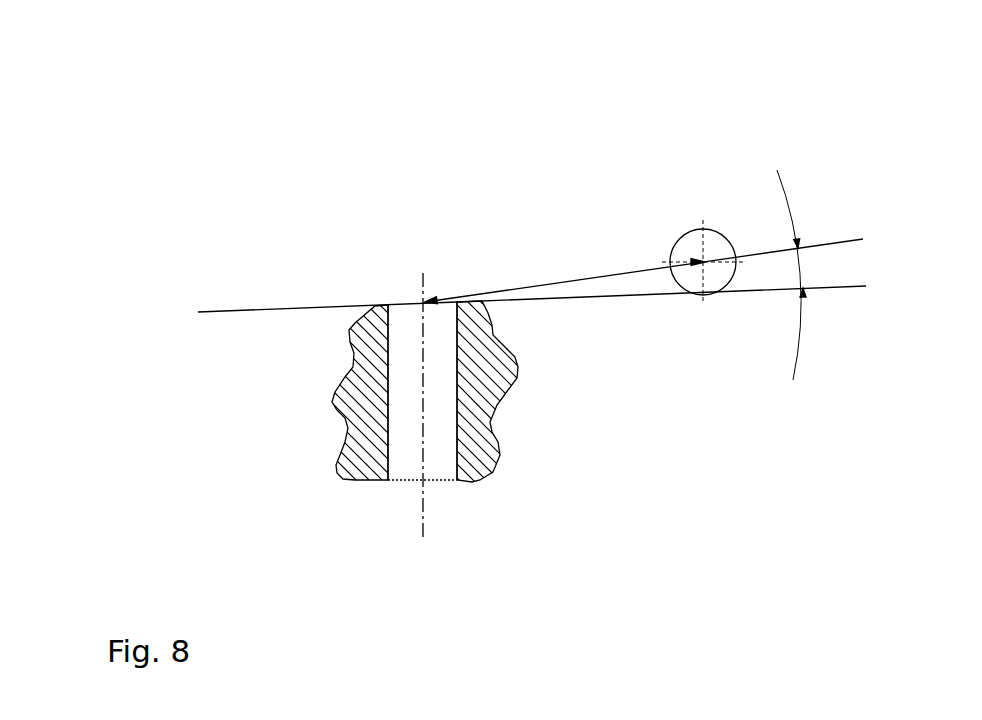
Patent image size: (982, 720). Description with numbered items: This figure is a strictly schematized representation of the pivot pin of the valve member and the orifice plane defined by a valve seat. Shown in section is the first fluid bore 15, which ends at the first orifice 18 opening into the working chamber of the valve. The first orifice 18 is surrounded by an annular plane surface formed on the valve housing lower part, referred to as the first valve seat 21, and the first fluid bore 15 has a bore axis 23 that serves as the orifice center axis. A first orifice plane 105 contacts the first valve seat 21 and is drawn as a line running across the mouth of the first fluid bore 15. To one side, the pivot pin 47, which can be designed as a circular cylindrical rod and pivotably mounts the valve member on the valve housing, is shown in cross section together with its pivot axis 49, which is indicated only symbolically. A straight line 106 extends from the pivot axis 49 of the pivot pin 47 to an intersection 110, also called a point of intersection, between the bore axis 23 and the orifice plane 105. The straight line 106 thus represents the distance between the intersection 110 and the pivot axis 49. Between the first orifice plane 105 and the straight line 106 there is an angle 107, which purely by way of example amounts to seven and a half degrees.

The first fluid bore 15 is at (408, 437).
The first orifice 18 is at (393, 297).
The first valve seat 21 is at (378, 304).
The bore axis 23 is at (425, 520).
The pivot pin 47 is at (715, 245).
The pivot axis 49 is at (703, 261).
The first orifice plane 105 is at (610, 297).
The straight line 106 is at (572, 280).
The angle 107 is at (805, 270).
The intersection 110 is at (428, 297).